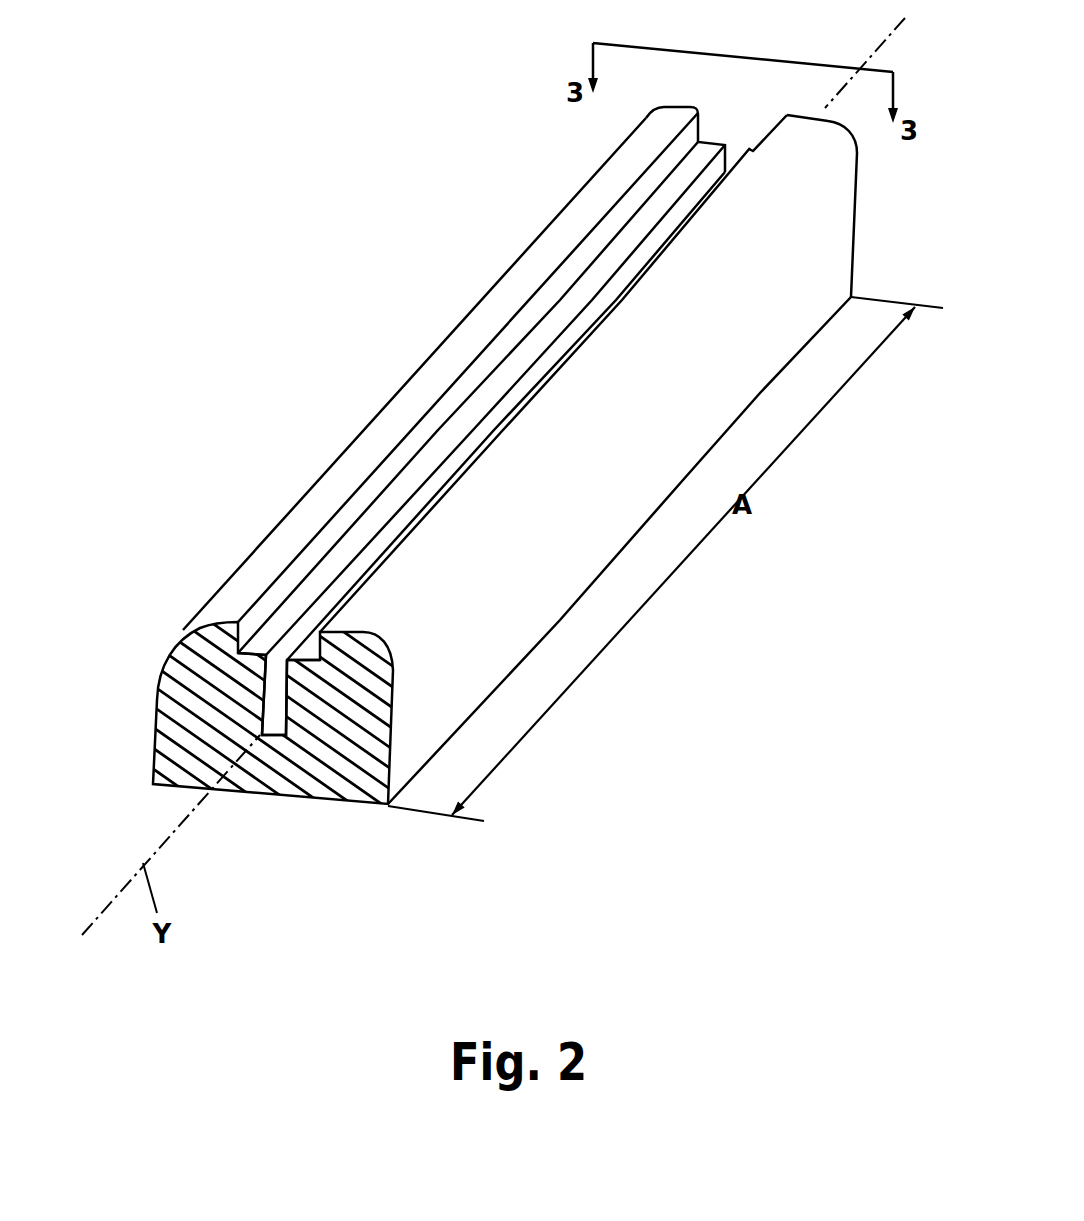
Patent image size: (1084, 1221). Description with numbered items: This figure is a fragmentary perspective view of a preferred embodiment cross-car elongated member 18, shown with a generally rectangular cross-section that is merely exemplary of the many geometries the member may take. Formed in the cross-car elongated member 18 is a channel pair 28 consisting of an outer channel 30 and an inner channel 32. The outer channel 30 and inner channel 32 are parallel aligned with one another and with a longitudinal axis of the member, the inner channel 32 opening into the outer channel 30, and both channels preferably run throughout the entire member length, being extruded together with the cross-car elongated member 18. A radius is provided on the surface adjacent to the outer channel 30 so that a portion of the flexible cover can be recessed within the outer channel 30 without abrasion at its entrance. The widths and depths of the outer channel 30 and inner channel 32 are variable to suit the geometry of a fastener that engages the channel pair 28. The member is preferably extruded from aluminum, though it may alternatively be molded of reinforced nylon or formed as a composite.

The cross-car elongated member 18 is at (383, 307).
The channel pair 28 is at (317, 588).
The outer channel 30 is at (263, 637).
The inner channel 32 is at (275, 692).